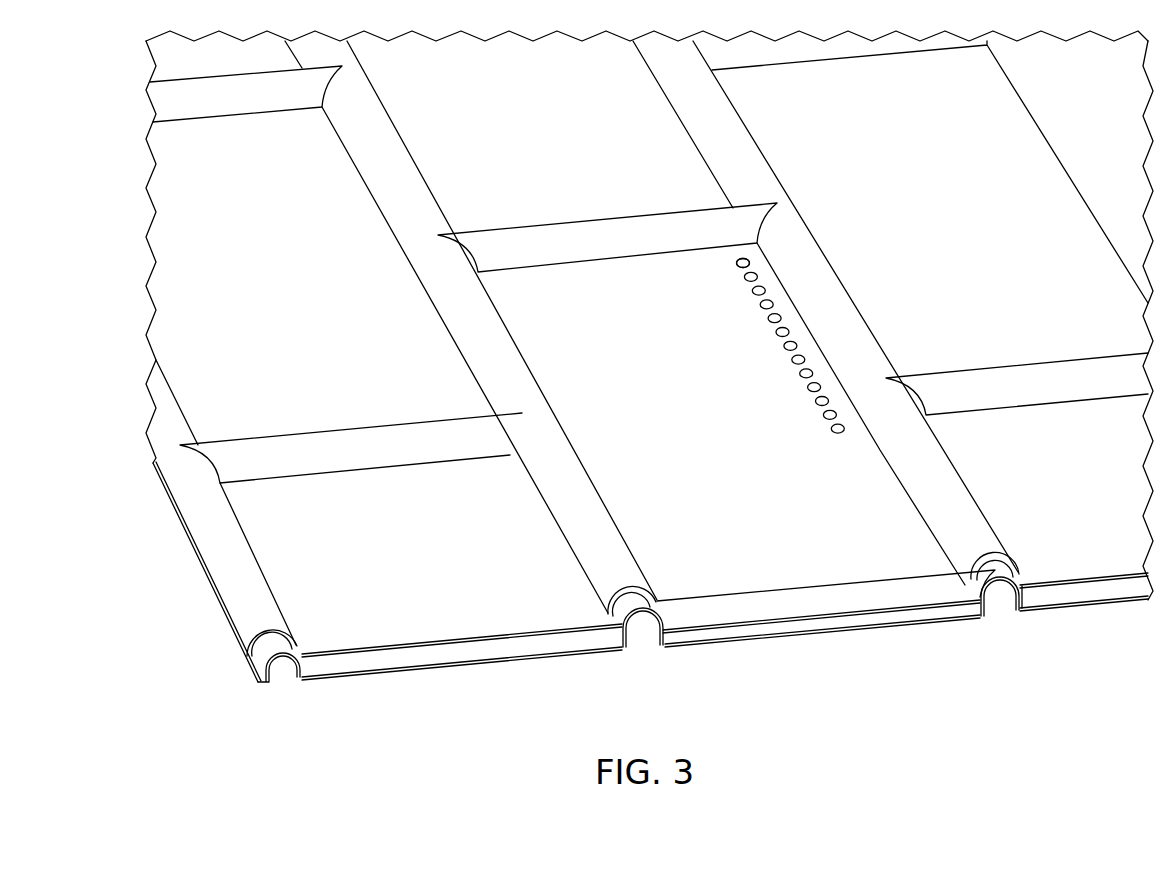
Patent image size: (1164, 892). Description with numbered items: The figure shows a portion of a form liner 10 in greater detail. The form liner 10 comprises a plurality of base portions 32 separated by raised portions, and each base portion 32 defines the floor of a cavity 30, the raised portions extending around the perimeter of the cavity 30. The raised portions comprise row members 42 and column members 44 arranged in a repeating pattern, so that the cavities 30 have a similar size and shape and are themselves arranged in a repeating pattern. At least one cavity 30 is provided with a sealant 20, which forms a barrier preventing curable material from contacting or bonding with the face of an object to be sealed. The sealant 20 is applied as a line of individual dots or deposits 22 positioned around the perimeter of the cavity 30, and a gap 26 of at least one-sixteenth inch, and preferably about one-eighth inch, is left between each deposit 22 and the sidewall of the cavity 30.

The form liner 10 is at (376, 713).
The sealant 20 is at (752, 291).
The deposits of sealant 22 is at (737, 263).
The gap 26 is at (762, 262).
The cavity 30 is at (254, 240).
The base portion 32 is at (222, 366).
The row member 42 is at (406, 163).
The column member 44 is at (553, 236).